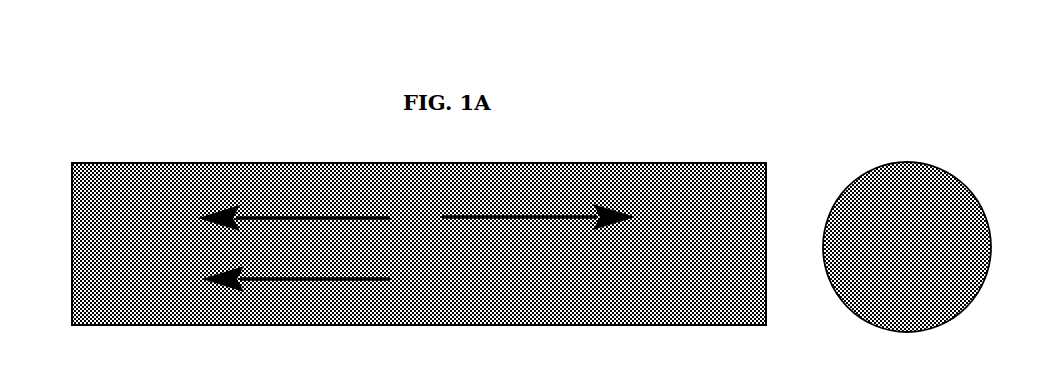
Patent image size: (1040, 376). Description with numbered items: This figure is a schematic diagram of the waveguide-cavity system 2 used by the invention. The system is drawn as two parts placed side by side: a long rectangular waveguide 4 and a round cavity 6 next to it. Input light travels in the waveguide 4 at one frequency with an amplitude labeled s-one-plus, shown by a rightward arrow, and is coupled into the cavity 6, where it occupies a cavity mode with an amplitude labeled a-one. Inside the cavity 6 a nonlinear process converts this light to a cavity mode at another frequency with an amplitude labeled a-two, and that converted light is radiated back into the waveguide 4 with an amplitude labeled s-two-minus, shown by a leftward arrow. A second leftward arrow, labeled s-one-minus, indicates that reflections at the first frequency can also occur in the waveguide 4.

The waveguide-cavity system 2 is at (253, 106).
The waveguide 4 is at (724, 182).
The cavity 6 is at (958, 196).